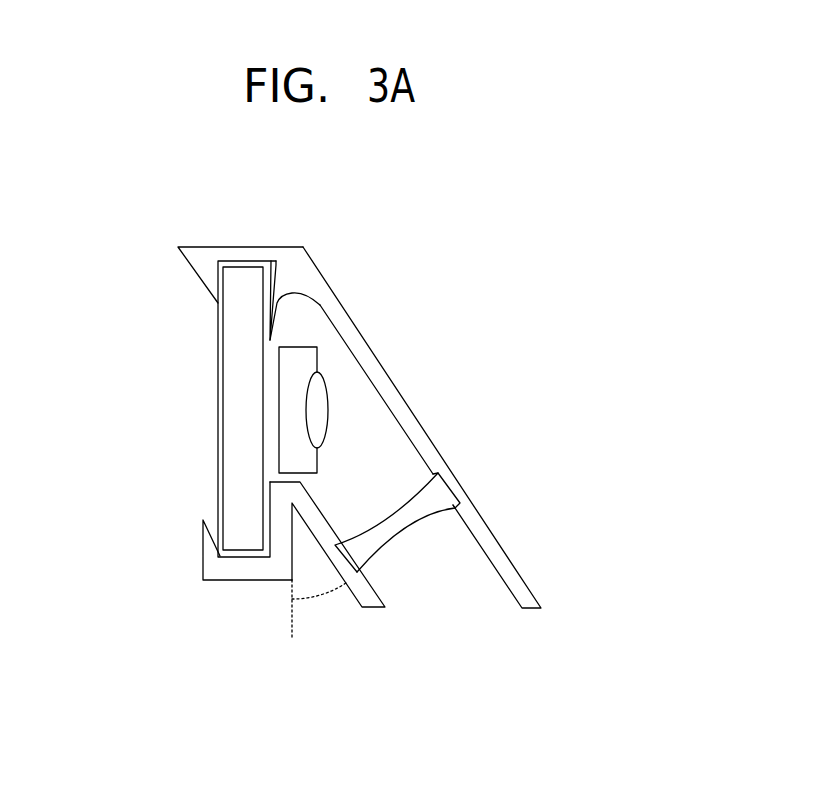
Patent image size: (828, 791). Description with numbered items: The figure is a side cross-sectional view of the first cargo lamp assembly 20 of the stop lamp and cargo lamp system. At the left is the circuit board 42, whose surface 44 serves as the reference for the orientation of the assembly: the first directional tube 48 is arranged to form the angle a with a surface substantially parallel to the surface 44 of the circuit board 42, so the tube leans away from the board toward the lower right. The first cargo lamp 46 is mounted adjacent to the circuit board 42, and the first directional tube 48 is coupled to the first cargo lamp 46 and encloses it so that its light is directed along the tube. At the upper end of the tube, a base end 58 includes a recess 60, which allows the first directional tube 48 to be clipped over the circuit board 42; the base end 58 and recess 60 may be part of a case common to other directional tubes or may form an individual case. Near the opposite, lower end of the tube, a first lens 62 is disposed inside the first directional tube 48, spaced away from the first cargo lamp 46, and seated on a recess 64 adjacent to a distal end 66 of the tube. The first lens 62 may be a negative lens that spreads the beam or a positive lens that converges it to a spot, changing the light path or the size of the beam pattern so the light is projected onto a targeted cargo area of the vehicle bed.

The first cargo lamp assembly 20 is at (408, 266).
The circuit board 42 is at (233, 370).
The surface 44 is at (262, 412).
The first cargo lamp 46 is at (292, 445).
The first directional tube 48 is at (393, 382).
The base end 58 is at (236, 248).
The recess 60 is at (272, 278).
The first lens 62 is at (414, 517).
The recess 64 is at (453, 483).
The distal end 66 is at (373, 603).